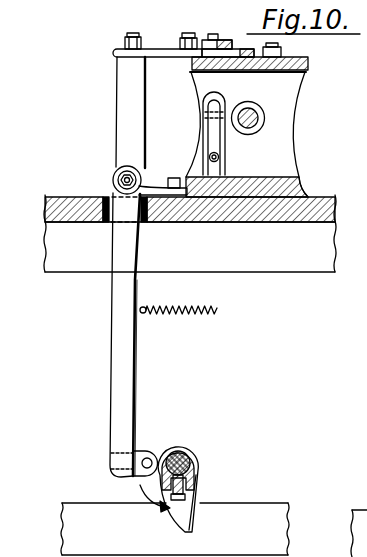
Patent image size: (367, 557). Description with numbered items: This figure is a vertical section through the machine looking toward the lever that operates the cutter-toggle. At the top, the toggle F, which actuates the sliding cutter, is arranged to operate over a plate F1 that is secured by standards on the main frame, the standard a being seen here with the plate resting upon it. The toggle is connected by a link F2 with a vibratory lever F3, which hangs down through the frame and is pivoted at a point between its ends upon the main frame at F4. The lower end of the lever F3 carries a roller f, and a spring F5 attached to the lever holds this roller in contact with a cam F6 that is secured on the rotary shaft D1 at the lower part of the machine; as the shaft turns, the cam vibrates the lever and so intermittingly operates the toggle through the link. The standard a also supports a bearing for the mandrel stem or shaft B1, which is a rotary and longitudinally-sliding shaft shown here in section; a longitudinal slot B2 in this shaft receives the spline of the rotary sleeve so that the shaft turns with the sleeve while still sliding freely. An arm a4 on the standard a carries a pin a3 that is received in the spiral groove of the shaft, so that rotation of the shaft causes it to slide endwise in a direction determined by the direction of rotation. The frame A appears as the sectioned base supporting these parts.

The table or bed A is at (205, 370).
The standard a is at (247, 134).
The pin a3 is at (203, 93).
The arm a4 is at (207, 137).
The stem or shaft B1 is at (260, 120).
The longitudinal slot B2 is at (256, 110).
The toggle F is at (241, 35).
The plate F1 is at (300, 58).
The link F2 is at (153, 49).
The vibratory lever F3 is at (127, 113).
The pivot F4 is at (113, 181).
The spring F5 is at (178, 323).
The cam F6 is at (186, 517).
The roller f is at (143, 452).
The rotary shaft D1 is at (176, 450).